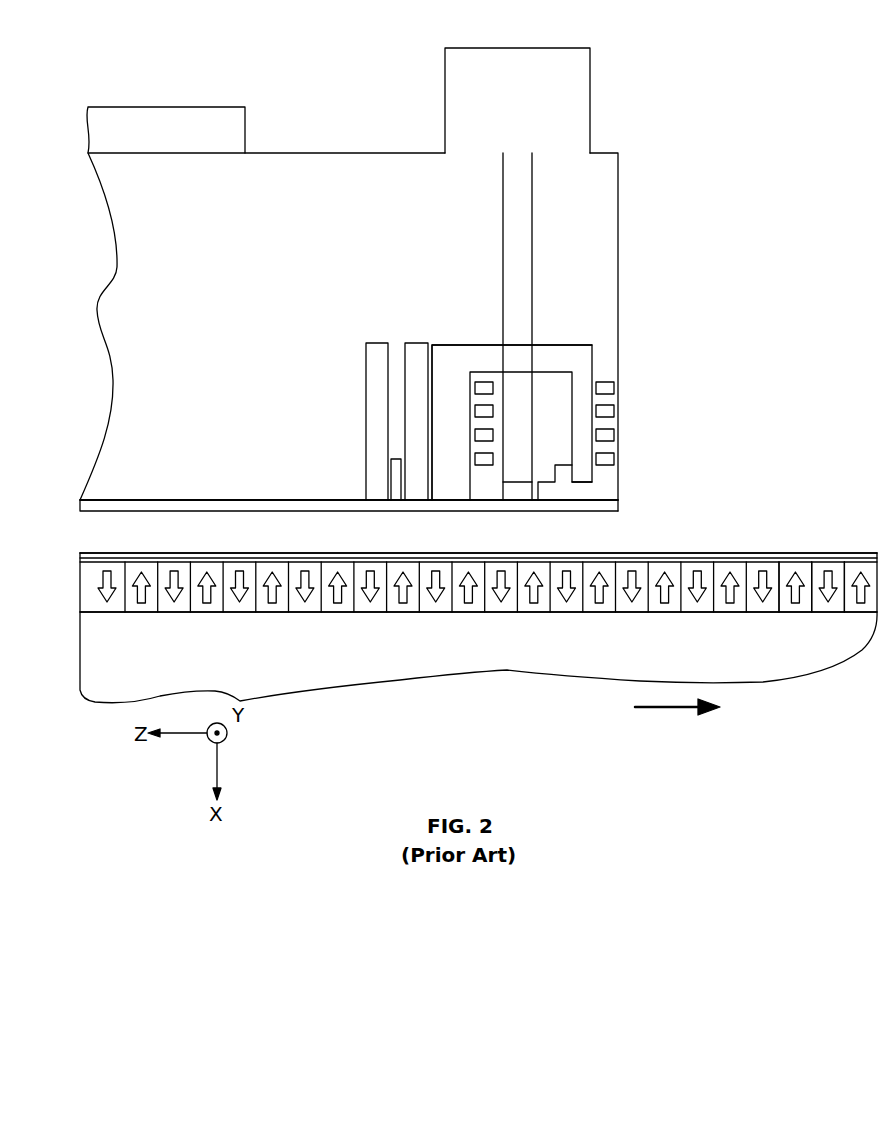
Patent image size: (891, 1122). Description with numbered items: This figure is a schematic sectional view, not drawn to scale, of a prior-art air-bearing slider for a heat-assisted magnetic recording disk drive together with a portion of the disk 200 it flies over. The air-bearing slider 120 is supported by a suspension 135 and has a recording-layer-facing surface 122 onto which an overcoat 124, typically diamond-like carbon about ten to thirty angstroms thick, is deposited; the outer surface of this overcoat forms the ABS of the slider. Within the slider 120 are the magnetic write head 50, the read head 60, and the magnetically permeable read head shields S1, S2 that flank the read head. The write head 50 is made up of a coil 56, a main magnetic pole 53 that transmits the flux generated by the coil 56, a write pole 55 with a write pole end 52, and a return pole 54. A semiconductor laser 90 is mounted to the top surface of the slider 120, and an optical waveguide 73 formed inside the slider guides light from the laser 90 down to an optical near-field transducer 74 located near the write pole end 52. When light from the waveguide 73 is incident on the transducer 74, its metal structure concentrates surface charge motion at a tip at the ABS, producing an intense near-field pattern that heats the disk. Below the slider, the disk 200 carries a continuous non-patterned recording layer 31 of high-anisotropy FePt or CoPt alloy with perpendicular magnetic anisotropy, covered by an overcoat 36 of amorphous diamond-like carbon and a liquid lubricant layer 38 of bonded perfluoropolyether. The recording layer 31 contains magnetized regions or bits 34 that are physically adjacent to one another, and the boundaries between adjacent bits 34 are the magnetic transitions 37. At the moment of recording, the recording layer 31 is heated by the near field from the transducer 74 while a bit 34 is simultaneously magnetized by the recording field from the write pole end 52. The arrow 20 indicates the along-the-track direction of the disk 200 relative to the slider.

The disk motion direction 20 is at (667, 712).
The recording layer 31 is at (63, 563).
The bits 34 is at (829, 571).
The overcoat 36 is at (773, 561).
The magnetic transitions 37 is at (842, 646).
The liquid lubricant layer 38 is at (712, 553).
The magnetic write head 50 is at (526, 326).
The write pole end 52 is at (546, 480).
The main magnetic pole 53 is at (585, 363).
The return pole 54 is at (453, 355).
The write pole 55 is at (566, 492).
The coil 56 is at (471, 375).
The read head 60 is at (389, 484).
The optical waveguide 73 is at (516, 287).
The optical near-field transducer 74 is at (512, 480).
The semiconductor laser 90 is at (578, 100).
The air-bearing slider 120 is at (121, 398).
The recording-layer-facing surface 122 is at (190, 500).
The overcoat 124 is at (216, 511).
The suspension 135 is at (237, 113).
The disk 200 is at (763, 672).
The read head shield S1 is at (372, 420).
The read head shield S2 is at (412, 340).
The air-bearing surface ABS is at (602, 511).